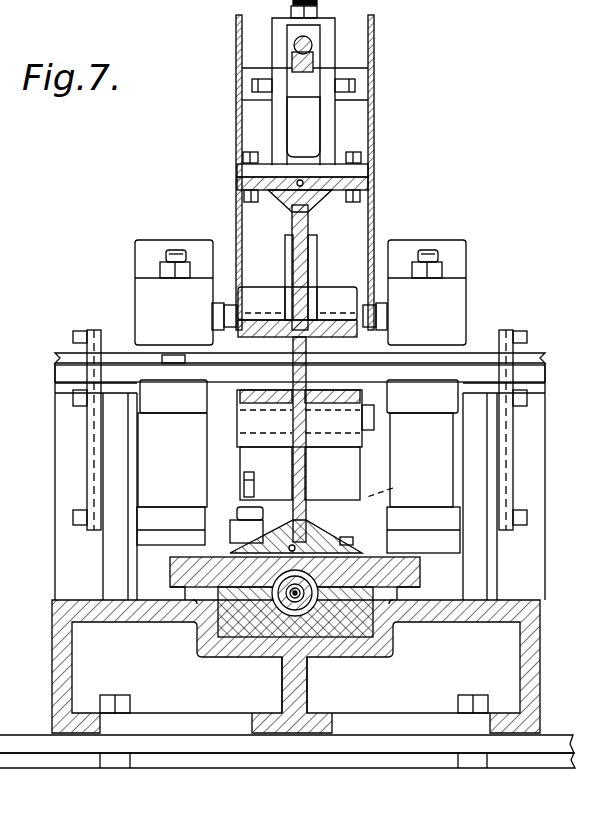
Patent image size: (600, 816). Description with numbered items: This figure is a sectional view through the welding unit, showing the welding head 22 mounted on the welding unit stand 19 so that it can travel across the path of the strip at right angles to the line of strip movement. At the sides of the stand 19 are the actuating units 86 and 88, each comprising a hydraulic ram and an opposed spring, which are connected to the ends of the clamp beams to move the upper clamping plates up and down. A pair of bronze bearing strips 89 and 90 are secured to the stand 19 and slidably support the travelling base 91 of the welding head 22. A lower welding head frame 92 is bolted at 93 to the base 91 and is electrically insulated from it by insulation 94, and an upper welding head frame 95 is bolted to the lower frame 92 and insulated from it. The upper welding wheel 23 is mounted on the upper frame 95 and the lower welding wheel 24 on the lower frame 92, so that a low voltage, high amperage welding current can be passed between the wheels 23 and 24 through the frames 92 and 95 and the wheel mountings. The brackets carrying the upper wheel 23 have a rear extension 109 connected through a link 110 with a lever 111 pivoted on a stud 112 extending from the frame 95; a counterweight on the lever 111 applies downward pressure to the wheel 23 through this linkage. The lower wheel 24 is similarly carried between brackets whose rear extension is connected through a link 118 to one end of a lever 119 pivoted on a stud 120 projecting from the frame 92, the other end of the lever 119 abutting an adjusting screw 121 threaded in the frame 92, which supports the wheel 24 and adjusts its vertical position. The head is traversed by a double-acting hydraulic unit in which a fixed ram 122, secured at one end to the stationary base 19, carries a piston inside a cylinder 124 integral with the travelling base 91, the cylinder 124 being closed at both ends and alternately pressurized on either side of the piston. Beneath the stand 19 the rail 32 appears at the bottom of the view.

The welding head 22 is at (178, 152).
The lever 111 is at (307, 53).
The stud 112 is at (345, 90).
The link 110 is at (370, 174).
The upper welding head frame 95 is at (308, 226).
The upper welding wheel 23 is at (325, 327).
The rear extension 109 is at (215, 327).
The link 118 is at (157, 537).
The lever 119 is at (244, 478).
The lower welding wheel 24 is at (305, 445).
The adjusting screw 121 is at (232, 500).
The stud 120 is at (401, 488).
The lower welding head frame 92 is at (305, 516).
The bolts 93 is at (358, 538).
The actuating unit 86 is at (135, 463).
The actuating unit 88 is at (442, 453).
The travelling base 91 is at (420, 577).
The bearing strip 89 is at (190, 604).
The bearing strip 90 is at (395, 618).
The welding unit stand 19 is at (58, 663).
The insulation 94 is at (240, 638).
The fixed ram 122 is at (312, 603).
The cylinder 124 is at (368, 640).
The bed rail 32 is at (16, 742).